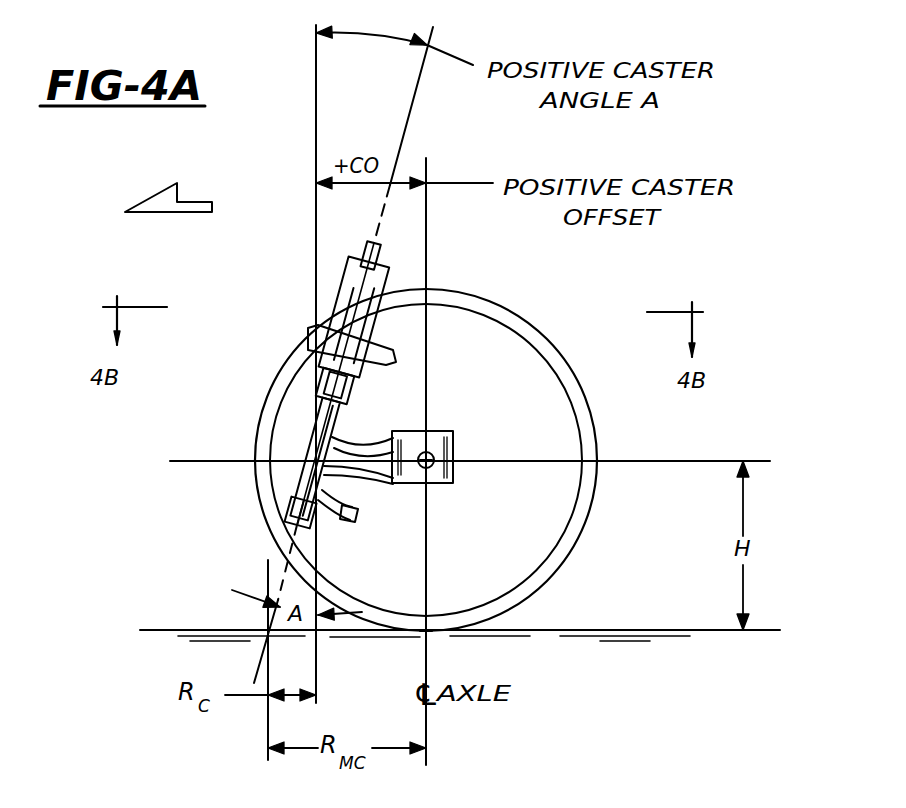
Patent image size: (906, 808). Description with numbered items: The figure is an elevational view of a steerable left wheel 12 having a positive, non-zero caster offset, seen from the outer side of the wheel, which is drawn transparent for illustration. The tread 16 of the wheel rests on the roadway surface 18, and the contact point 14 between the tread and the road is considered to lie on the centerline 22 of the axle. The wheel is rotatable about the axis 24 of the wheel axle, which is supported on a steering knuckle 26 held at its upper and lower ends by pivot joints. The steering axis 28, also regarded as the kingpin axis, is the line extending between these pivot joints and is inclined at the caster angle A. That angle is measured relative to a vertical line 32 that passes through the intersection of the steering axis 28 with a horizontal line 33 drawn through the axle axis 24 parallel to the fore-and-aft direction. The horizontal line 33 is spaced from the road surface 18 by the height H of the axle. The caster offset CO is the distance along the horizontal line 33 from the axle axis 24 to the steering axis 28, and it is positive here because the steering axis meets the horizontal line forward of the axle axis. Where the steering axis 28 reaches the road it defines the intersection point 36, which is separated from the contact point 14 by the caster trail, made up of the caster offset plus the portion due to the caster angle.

The left wheel 12 is at (540, 318).
The contact point 14 is at (430, 630).
The tread 16 is at (595, 500).
The roadway surface 18 is at (622, 630).
The centerline of the axle 22 is at (426, 172).
The axis of the wheel axle 24 is at (428, 455).
The steering knuckle 26 is at (440, 483).
The steering axis 28 is at (283, 567).
The vertical line 32 is at (316, 130).
The horizontal line 33 is at (672, 461).
The steering axis intersection point 36 is at (268, 632).